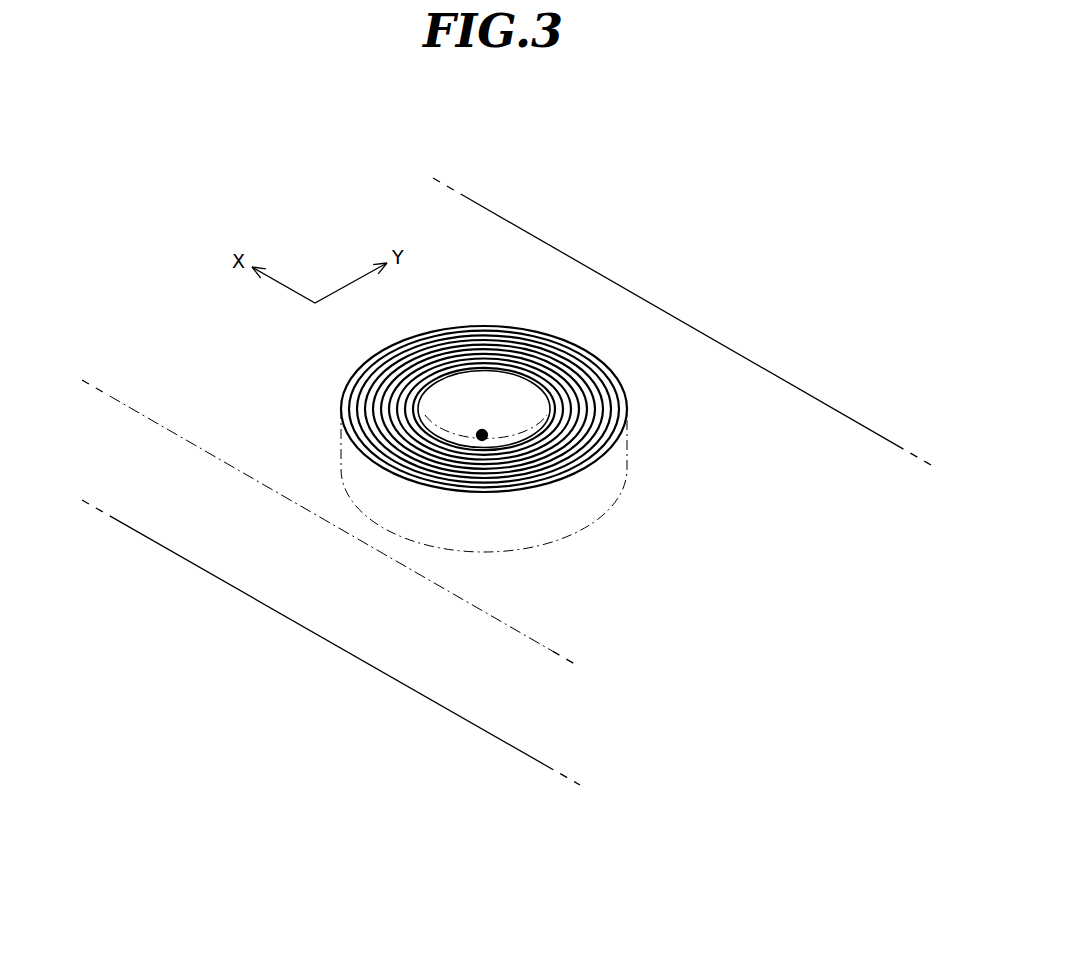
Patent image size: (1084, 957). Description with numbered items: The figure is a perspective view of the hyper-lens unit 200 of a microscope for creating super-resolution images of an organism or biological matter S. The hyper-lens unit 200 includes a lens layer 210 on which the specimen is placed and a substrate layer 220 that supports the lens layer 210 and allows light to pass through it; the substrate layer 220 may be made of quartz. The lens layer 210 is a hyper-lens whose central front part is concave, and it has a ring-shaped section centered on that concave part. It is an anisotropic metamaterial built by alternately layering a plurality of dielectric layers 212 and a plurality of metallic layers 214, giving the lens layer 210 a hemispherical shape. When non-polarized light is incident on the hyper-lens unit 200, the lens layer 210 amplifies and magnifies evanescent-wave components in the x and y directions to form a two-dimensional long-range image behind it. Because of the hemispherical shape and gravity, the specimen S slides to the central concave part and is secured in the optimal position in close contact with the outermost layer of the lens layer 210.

The hyper-lens unit 200 is at (646, 187).
The lens layer 210 is at (573, 337).
The dielectric layers 212 is at (625, 420).
The metallic layers 214 is at (618, 442).
The substrate layer 220 is at (689, 348).
The organism or biological matter S is at (481, 433).